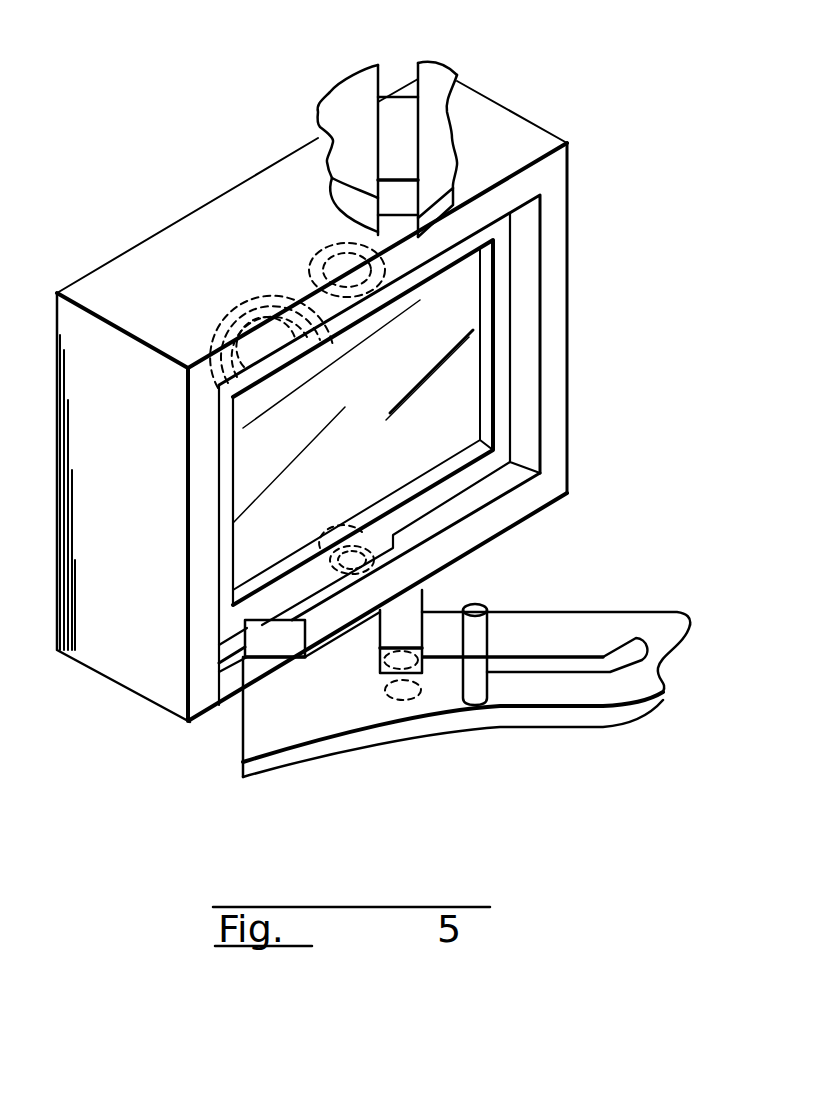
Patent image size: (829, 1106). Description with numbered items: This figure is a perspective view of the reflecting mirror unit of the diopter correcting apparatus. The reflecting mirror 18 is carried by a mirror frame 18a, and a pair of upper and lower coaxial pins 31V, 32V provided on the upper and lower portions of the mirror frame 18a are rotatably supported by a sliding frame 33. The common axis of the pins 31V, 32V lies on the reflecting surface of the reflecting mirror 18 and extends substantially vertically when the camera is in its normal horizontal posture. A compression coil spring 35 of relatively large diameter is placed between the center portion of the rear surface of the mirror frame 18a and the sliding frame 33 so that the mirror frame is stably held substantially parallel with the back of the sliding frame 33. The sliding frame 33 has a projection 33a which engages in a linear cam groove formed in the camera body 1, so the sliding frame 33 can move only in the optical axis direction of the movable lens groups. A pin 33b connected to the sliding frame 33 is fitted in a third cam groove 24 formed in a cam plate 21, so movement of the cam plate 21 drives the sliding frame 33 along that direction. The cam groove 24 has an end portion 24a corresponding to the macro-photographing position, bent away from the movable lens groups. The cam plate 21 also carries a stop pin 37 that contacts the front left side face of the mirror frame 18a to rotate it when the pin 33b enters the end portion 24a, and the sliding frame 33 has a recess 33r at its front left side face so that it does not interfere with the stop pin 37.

The camera body 1 is at (438, 85).
The reflecting mirror 18 is at (467, 387).
The mirror frame 18a is at (503, 322).
The cam plate 21 is at (288, 718).
The third cam groove 24 is at (541, 665).
The end portion 24a is at (632, 648).
The upper coaxial pin 31V is at (307, 247).
The lower coaxial pin 32V is at (370, 575).
The sliding frame 33 is at (128, 268).
The projection 33a is at (390, 120).
The pin 33b is at (420, 673).
The recess 33r is at (258, 668).
The compression coil spring 35 is at (243, 307).
The stop pin 37 is at (477, 640).